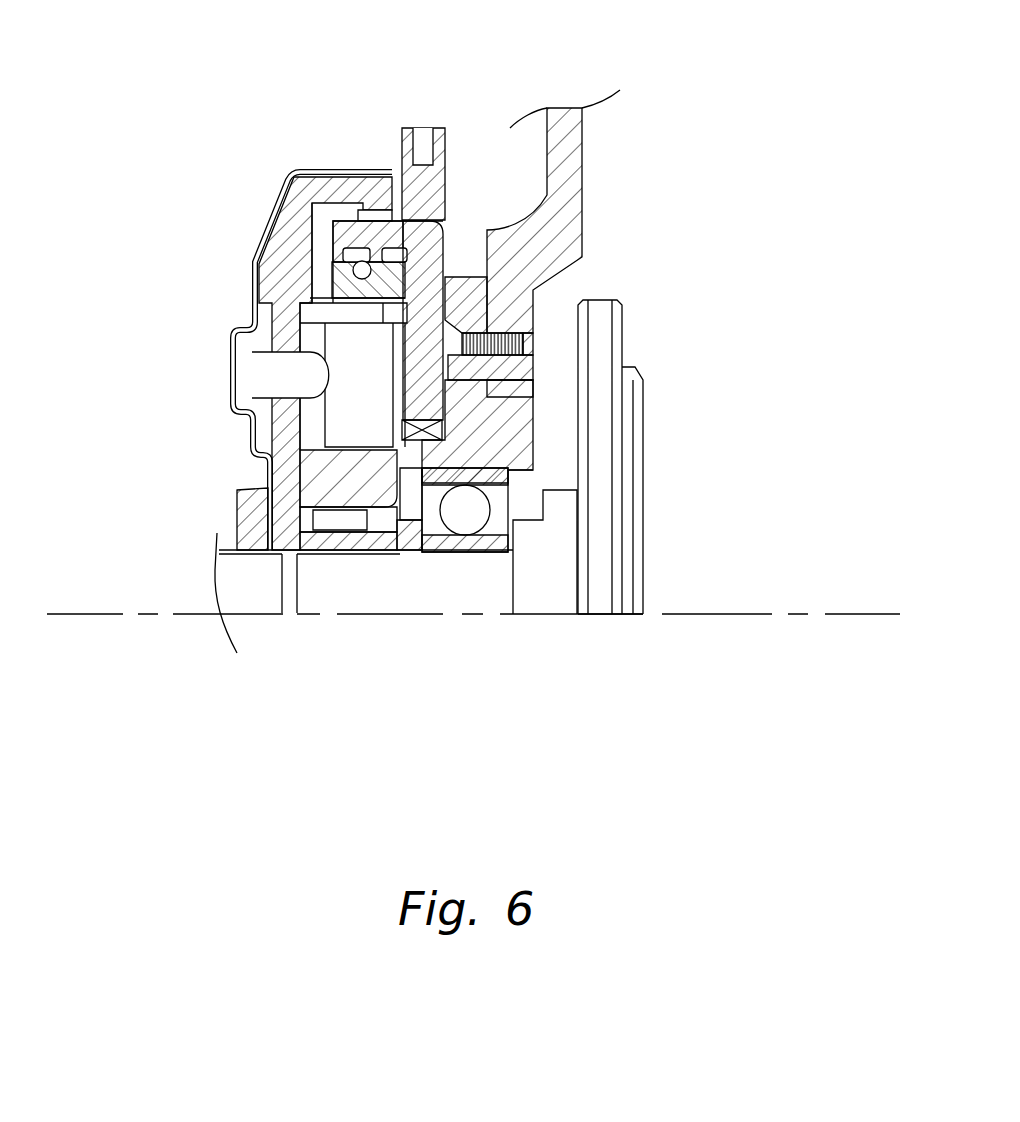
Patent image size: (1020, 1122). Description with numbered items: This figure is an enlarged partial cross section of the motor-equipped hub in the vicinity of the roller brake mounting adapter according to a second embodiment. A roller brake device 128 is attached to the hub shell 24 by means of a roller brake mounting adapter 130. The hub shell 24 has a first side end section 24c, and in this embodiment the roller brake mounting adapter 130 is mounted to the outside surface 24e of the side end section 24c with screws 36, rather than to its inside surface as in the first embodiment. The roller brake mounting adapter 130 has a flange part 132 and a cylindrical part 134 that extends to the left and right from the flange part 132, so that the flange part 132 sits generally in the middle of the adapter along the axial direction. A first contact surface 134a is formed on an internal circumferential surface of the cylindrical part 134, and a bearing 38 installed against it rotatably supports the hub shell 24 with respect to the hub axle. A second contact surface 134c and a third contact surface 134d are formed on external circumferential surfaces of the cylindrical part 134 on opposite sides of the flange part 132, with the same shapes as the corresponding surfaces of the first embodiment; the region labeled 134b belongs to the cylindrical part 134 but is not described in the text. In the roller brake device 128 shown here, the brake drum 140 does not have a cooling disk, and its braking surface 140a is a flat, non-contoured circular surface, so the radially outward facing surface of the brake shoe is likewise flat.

The hub shell 24 is at (652, 150).
The first side end section 24c is at (575, 214).
The outside surface 24e is at (487, 256).
The screws 36 is at (533, 290).
The bearing 38 is at (472, 548).
The roller brake device 128 is at (285, 122).
The roller brake mounting adapter 130 is at (550, 436).
The flange part 132 is at (533, 343).
The cylindrical part 134 is at (495, 462).
The first contact surface 134a is at (493, 470).
The hub inner portion 134b is at (424, 470).
The second contact surface 134c is at (418, 421).
The third contact surface 134d is at (467, 375).
The brake drum 140 is at (372, 210).
The braking surface 140a is at (405, 262).